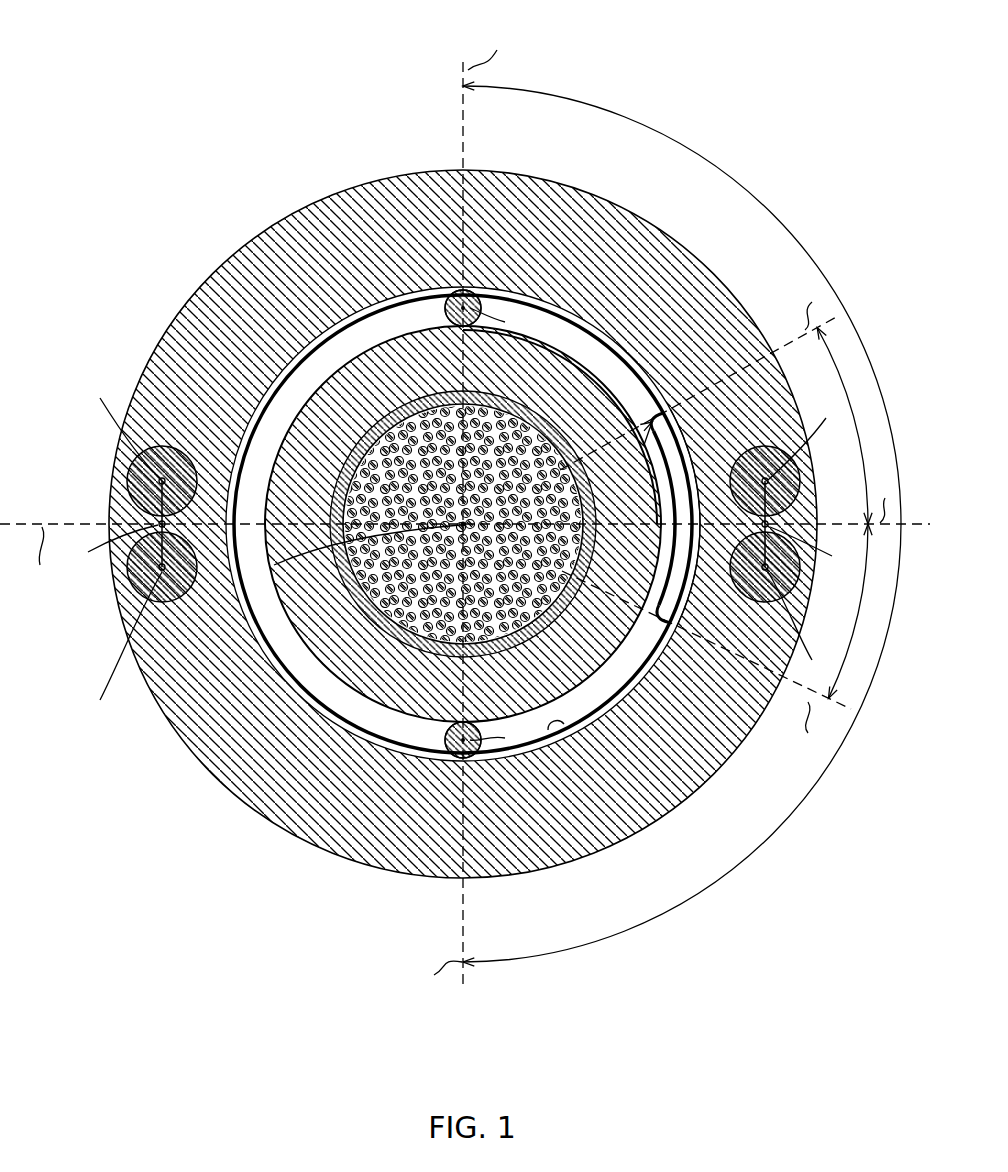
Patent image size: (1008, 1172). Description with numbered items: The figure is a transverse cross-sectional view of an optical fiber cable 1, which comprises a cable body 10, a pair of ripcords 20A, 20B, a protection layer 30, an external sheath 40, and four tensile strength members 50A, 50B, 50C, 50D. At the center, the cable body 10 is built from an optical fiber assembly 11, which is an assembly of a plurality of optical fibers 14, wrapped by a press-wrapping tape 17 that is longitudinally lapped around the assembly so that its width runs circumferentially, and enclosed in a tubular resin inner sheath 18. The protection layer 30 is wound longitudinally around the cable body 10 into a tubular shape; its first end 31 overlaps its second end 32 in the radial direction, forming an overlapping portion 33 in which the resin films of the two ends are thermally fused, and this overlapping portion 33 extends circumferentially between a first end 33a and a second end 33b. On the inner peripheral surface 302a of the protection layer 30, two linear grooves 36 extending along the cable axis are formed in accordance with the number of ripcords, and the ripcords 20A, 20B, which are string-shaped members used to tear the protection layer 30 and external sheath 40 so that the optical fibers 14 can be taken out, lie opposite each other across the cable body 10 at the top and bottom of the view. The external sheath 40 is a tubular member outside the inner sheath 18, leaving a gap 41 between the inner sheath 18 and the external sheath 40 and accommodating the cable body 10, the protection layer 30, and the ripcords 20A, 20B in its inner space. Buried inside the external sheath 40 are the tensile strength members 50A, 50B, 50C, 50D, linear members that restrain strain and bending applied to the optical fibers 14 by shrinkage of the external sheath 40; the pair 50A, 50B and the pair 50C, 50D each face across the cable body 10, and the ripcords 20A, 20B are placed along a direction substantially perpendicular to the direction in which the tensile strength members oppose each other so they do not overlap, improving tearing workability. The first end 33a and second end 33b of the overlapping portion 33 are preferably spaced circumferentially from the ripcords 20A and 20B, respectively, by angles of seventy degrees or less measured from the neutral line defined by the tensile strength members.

The optical fiber cable 1 is at (465, 507).
The cable body 10 is at (609, 372).
The optical fiber assembly 11 is at (354, 577).
The optical fiber 14 is at (383, 603).
The press-wrapping tape 17 is at (330, 392).
The inner sheath 18 is at (225, 688).
The first ripcord 20A is at (456, 308).
The second ripcord 20B is at (456, 745).
The protection layer 30 is at (576, 322).
The first end of the protection layer 31 is at (672, 413).
The second end of the protection layer 32 is at (722, 625).
The overlapping portion 33 is at (707, 543).
The first end of the overlapping portion 33a is at (670, 420).
The second end of the overlapping portion 33b is at (668, 620).
The groove 36 is at (478, 298).
The external sheath 40 is at (653, 823).
The gap 41 is at (362, 340).
The tensile strength member 50A is at (786, 486).
The tensile strength member 50B is at (132, 488).
The tensile strength member 50C is at (785, 566).
The tensile strength member 50D is at (136, 575).
The inner peripheral surface of the protection layer 302a is at (556, 735).